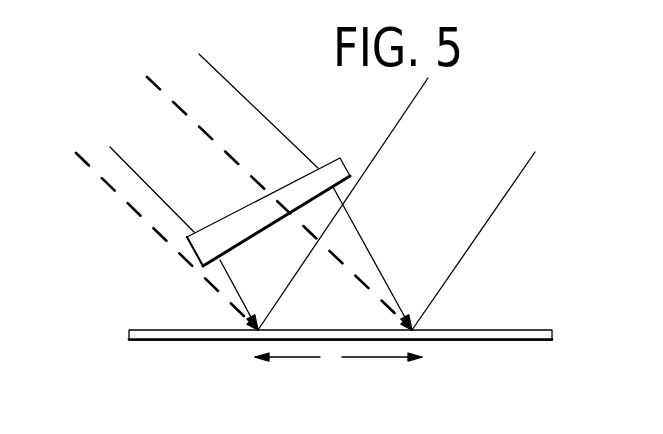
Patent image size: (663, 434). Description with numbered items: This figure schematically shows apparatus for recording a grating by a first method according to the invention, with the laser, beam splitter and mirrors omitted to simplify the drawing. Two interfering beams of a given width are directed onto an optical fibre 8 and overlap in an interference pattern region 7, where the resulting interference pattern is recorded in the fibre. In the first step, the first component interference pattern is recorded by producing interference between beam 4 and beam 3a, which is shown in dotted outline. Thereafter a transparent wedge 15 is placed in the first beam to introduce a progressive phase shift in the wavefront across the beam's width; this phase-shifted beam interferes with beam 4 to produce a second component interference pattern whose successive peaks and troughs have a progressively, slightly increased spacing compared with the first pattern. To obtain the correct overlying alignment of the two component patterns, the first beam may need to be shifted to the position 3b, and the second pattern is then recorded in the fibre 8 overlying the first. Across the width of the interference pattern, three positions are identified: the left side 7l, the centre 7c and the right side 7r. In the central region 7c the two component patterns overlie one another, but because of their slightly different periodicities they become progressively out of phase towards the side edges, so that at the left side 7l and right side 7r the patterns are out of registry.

The beam 3a is at (142, 72).
The beam position 3b is at (232, 85).
The beam 4 is at (510, 187).
The interference pattern region 7 is at (338, 357).
The left side of interference pattern 7l is at (262, 391).
The centre of interference pattern 7c is at (328, 391).
The right side of interference pattern 7r is at (411, 391).
The optical fibre 8 is at (513, 330).
The transparent wedge 15 is at (339, 156).